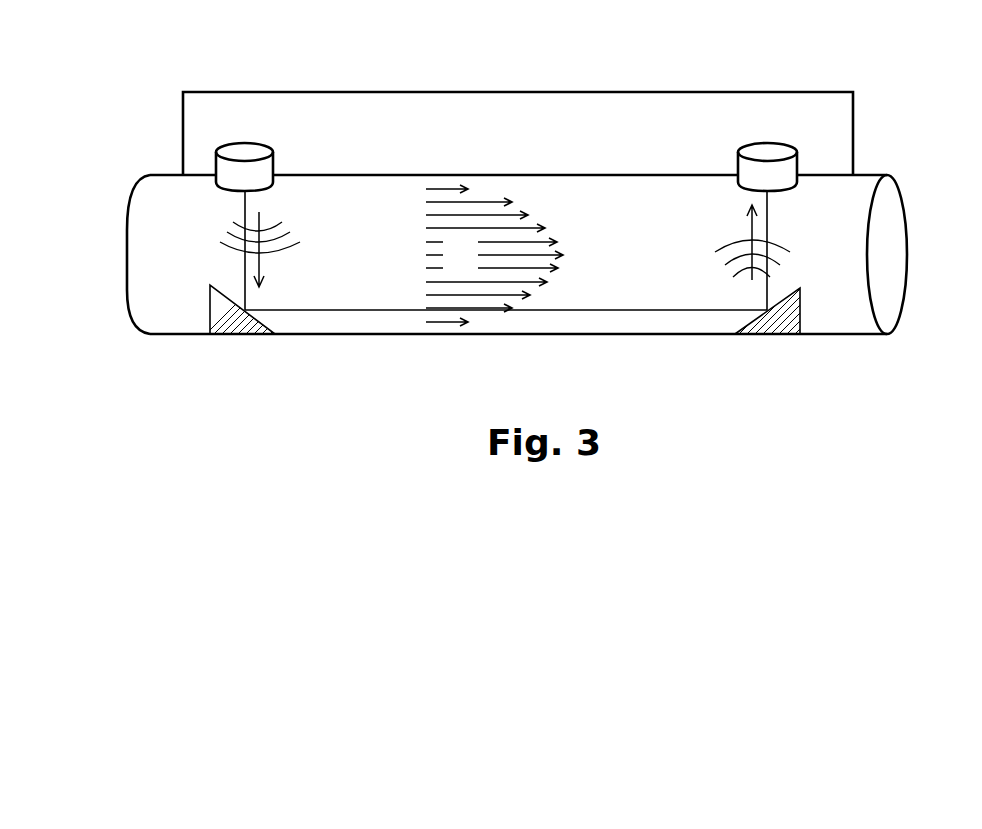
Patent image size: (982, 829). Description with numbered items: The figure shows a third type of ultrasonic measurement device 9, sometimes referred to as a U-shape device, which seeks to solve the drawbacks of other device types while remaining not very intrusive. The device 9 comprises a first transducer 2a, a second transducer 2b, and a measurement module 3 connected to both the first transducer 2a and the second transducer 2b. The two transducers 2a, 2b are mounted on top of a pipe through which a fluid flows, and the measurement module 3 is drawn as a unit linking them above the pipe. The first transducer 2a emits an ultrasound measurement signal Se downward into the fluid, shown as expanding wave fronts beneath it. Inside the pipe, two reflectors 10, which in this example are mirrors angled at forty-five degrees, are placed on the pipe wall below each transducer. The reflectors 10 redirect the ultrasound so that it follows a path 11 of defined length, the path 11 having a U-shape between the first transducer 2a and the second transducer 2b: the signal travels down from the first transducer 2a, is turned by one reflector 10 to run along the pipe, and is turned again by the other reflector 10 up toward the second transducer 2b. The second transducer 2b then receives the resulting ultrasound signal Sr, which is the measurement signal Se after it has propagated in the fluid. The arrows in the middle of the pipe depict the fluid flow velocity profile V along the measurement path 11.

The measurement device 9 is at (893, 109).
The measurement module 3 is at (430, 92).
The first transducer 2a is at (263, 148).
The second transducer 2b is at (752, 150).
The reflectors 10 is at (232, 336).
The path 11 is at (370, 312).
The flow velocity profile V is at (468, 246).
The ultrasound measurement signal Se is at (283, 257).
The ultrasound signal Sr is at (720, 247).